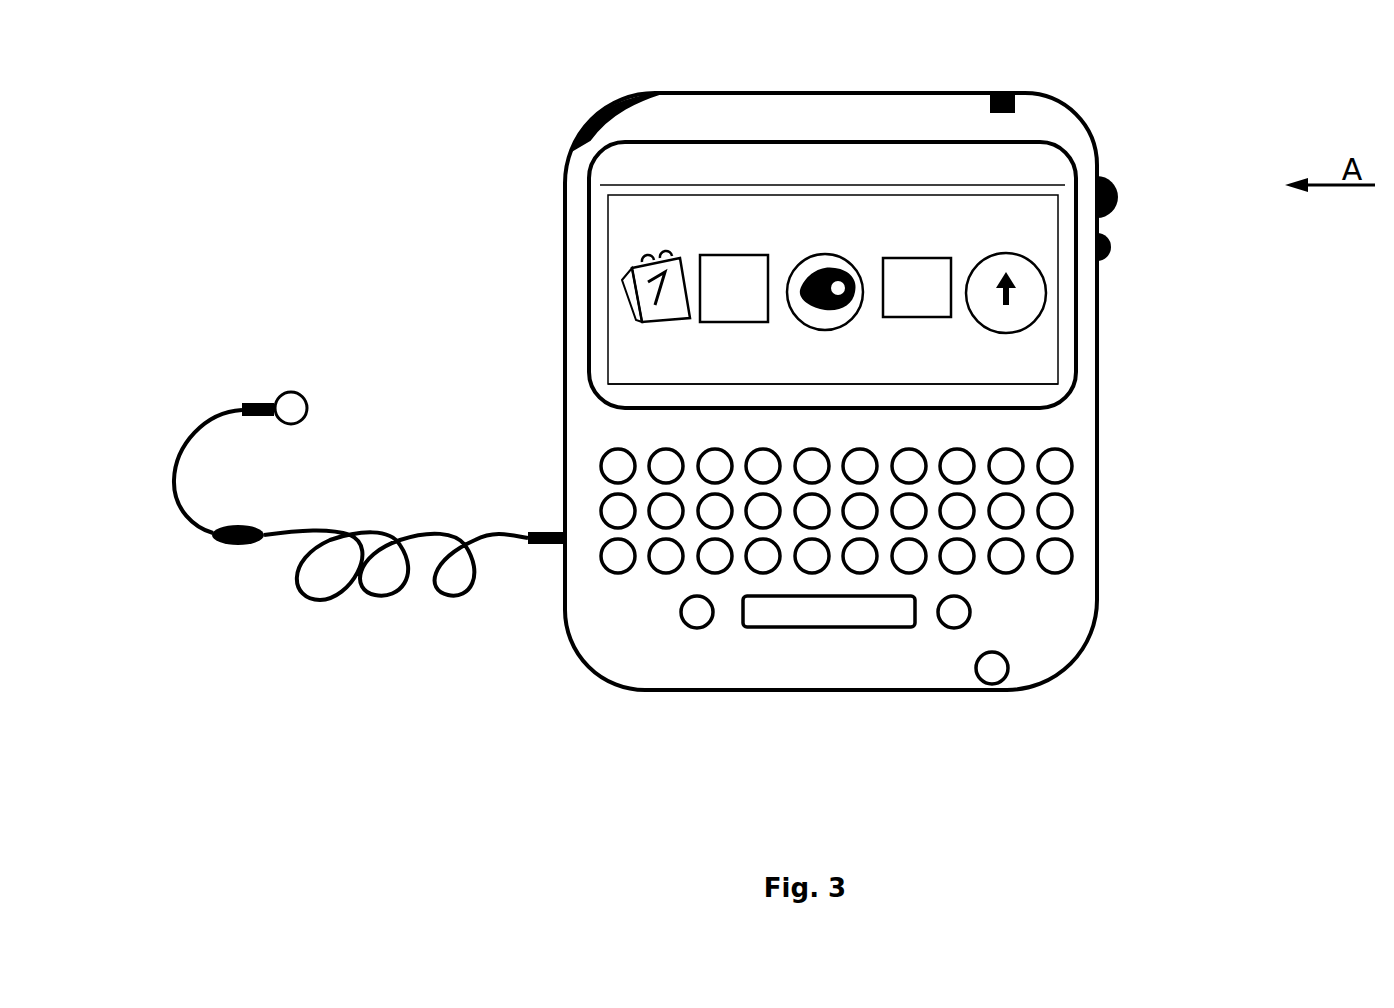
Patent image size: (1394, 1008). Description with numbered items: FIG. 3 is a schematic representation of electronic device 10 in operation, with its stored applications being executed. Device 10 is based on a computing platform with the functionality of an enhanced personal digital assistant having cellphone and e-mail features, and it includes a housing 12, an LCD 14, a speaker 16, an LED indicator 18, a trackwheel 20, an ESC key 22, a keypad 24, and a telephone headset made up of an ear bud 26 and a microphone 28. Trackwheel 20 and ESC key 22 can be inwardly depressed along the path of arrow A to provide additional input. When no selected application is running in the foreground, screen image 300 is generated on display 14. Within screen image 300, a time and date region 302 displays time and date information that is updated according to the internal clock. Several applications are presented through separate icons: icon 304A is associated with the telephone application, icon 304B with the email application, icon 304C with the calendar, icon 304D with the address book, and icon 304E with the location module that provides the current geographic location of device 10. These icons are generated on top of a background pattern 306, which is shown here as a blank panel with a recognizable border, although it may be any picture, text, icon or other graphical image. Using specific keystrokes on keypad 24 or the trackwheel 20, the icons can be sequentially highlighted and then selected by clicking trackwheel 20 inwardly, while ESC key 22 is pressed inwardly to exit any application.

The electronic device 10 is at (798, 710).
The housing 12 is at (1034, 665).
The LCD 14 is at (1064, 352).
The speaker 16 is at (588, 118).
The LED indicator 18 is at (1020, 103).
The trackwheel 20 is at (1120, 197).
The ESC key 22 is at (1114, 247).
The keypad 24 is at (1082, 540).
The ear bud 26 is at (322, 408).
The microphone 28 is at (265, 530).
The screen image 300 is at (596, 361).
The time and date region 302 is at (606, 172).
The icon 304A is at (836, 243).
The icon 304B is at (913, 243).
The icon 304C is at (666, 243).
The icon 304D is at (758, 243).
The icon 304E is at (1018, 243).
The background pattern 306 is at (1046, 380).